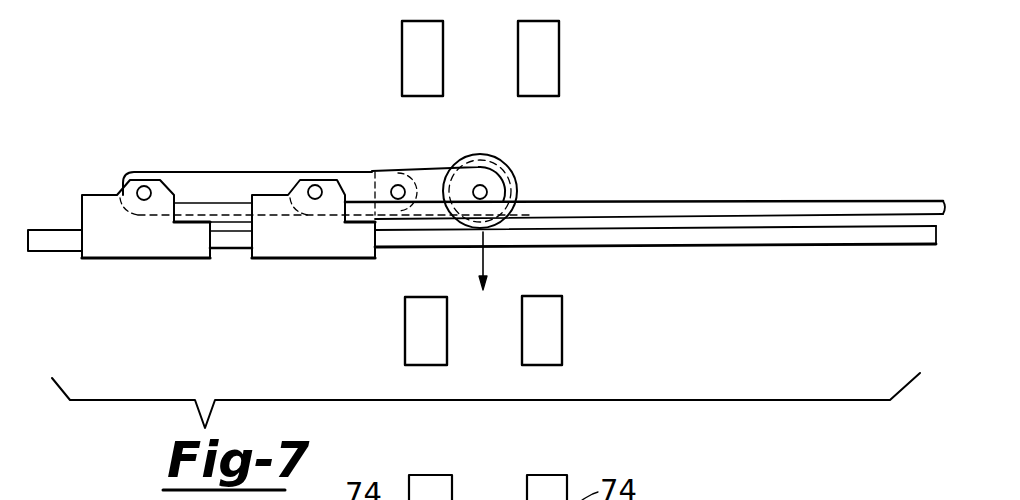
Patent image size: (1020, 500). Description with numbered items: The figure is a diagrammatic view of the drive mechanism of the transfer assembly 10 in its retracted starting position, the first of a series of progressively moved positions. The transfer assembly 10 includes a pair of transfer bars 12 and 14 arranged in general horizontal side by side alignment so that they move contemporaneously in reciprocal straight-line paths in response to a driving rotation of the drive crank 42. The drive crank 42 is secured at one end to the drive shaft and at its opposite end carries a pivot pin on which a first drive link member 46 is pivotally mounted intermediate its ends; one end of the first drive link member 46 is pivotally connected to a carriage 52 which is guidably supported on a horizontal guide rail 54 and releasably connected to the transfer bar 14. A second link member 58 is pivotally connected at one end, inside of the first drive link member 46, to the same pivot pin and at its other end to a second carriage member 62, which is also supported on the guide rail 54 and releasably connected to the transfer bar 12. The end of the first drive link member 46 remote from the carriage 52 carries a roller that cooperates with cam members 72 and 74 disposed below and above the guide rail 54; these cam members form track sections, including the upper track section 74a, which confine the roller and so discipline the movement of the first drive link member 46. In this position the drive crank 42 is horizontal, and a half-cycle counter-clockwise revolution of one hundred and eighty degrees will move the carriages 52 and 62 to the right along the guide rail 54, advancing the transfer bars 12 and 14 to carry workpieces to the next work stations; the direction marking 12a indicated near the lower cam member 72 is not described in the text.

The transfer assembly 10 is at (512, 166).
The transfer bar 12 is at (234, 206).
The direction of movement of lower rollers 12a is at (490, 338).
The transfer bar 14 is at (720, 205).
The drive crank 42 is at (420, 168).
The first drive link member 46 is at (352, 180).
The carriage 52 is at (288, 248).
The horizontal guide rail 54 is at (758, 237).
The second link member 58 is at (180, 172).
The second carriage member 62 is at (123, 248).
The cam member 72 is at (404, 335).
The cam member 74 is at (402, 41).
The track section 74a is at (506, 20).